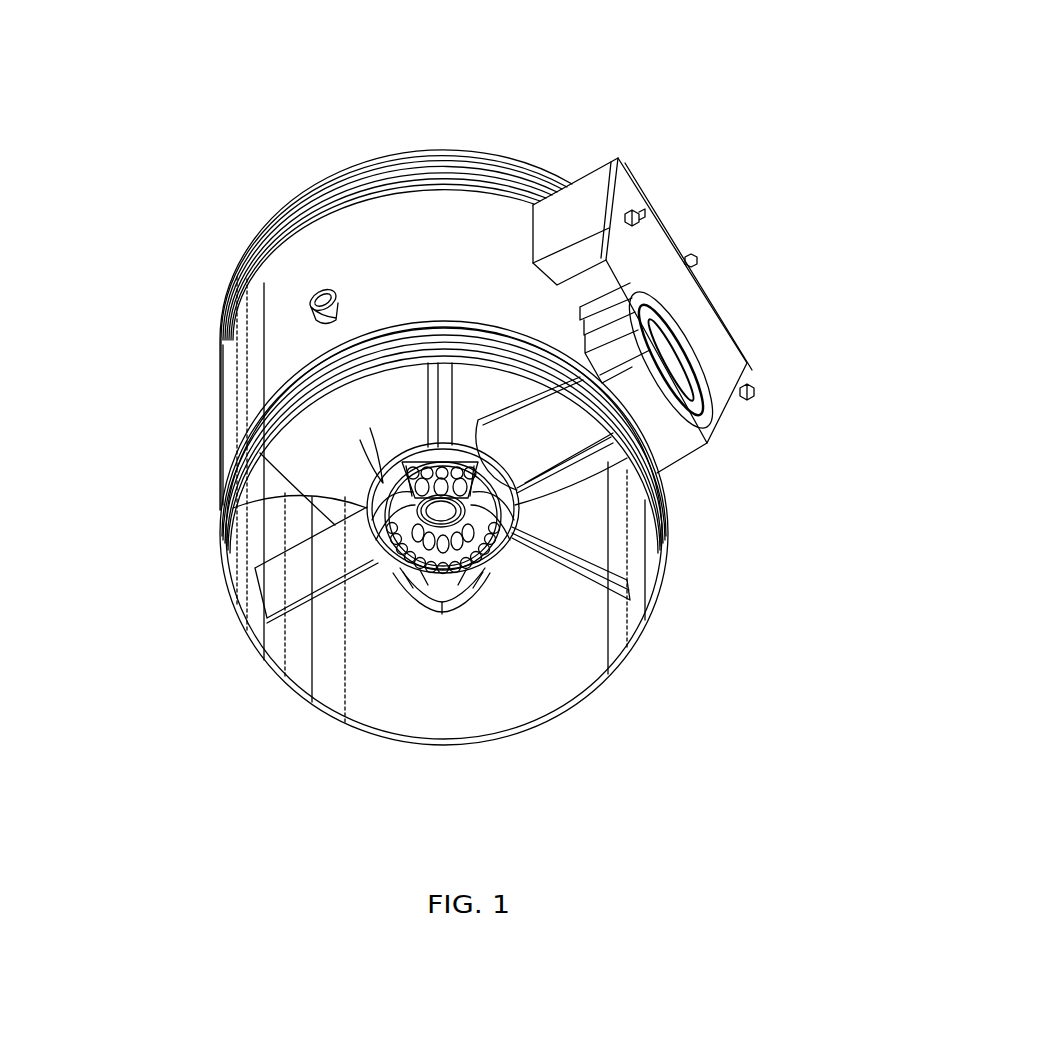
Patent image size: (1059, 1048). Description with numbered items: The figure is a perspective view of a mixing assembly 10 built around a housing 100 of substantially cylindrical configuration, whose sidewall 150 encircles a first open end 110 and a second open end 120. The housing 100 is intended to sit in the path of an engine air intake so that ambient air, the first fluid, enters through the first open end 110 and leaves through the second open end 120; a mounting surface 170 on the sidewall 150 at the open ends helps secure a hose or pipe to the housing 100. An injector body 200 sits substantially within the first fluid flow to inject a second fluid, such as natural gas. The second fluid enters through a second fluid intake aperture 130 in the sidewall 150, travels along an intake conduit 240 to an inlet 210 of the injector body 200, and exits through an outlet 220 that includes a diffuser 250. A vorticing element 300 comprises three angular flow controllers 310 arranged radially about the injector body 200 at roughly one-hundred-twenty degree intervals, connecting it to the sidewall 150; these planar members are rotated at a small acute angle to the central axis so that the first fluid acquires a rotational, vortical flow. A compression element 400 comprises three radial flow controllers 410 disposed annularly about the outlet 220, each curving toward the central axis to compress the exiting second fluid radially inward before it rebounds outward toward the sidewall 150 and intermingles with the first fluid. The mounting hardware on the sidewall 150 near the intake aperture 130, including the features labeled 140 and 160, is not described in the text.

The mixing assembly 10 is at (692, 108).
The housing 100 is at (223, 452).
The first open end 110 is at (255, 213).
The second open end 120 is at (250, 543).
The second fluid intake aperture 130 is at (696, 355).
The motor mount plate 140 is at (700, 312).
The sidewall 150 is at (300, 287).
The motor housing 160 is at (704, 448).
The mounting surface 170 is at (370, 167).
The injector body 200 is at (403, 430).
The inlet 210 is at (530, 478).
The outlet 220 is at (387, 590).
The intake conduit 240 is at (529, 428).
The diffuser 250 is at (417, 602).
The vorticing element 300 is at (553, 610).
The angular flow controller 310 is at (430, 388).
The compression element 400 is at (487, 617).
The radial flow controller 410 is at (220, 510).